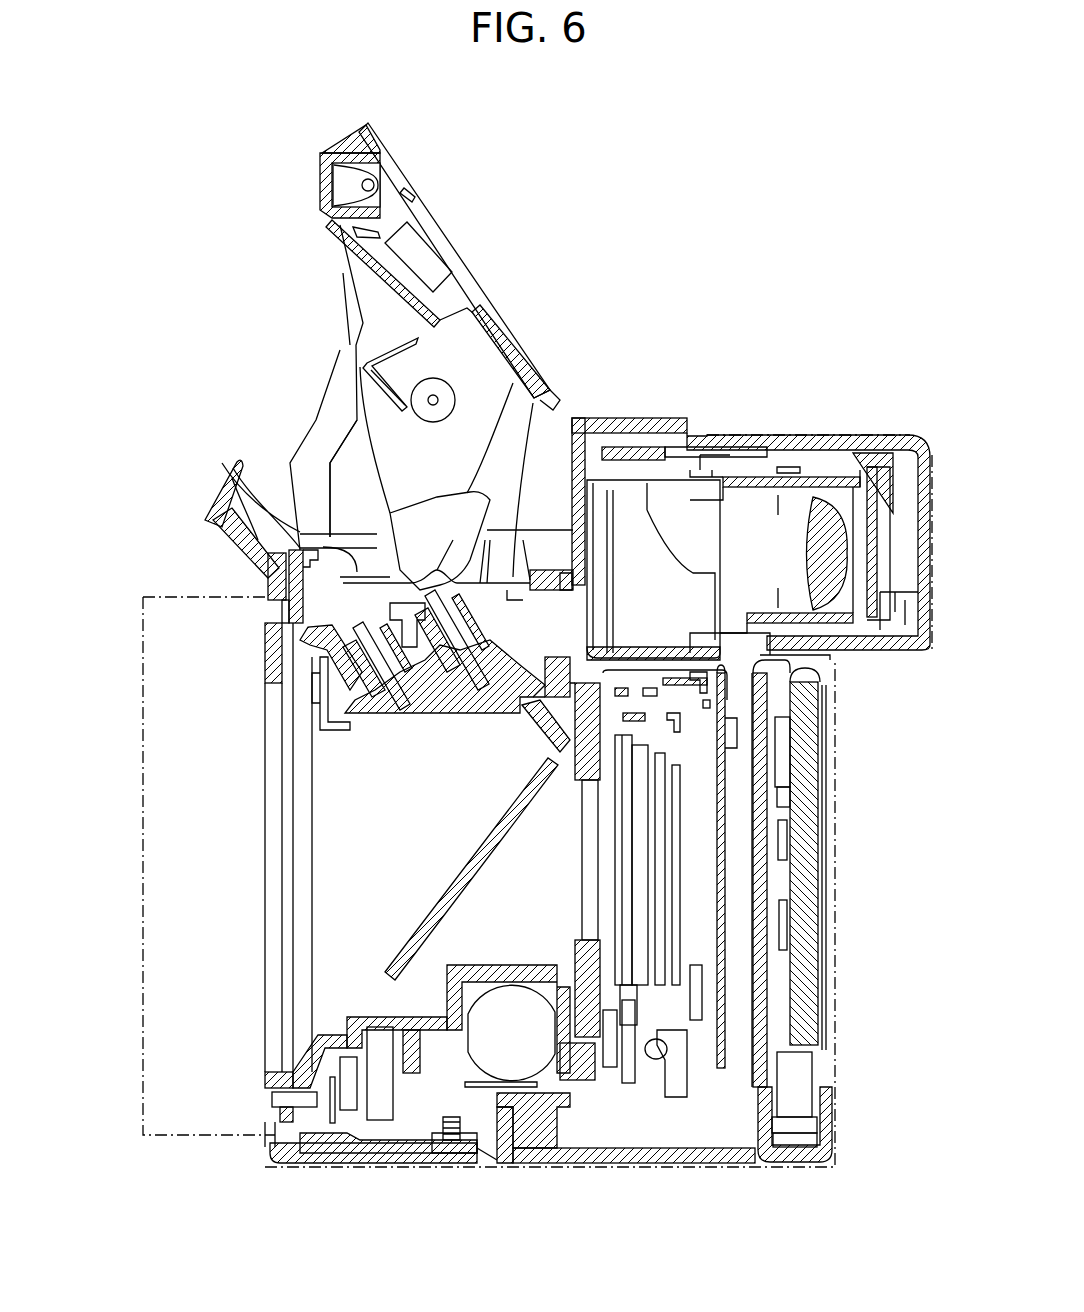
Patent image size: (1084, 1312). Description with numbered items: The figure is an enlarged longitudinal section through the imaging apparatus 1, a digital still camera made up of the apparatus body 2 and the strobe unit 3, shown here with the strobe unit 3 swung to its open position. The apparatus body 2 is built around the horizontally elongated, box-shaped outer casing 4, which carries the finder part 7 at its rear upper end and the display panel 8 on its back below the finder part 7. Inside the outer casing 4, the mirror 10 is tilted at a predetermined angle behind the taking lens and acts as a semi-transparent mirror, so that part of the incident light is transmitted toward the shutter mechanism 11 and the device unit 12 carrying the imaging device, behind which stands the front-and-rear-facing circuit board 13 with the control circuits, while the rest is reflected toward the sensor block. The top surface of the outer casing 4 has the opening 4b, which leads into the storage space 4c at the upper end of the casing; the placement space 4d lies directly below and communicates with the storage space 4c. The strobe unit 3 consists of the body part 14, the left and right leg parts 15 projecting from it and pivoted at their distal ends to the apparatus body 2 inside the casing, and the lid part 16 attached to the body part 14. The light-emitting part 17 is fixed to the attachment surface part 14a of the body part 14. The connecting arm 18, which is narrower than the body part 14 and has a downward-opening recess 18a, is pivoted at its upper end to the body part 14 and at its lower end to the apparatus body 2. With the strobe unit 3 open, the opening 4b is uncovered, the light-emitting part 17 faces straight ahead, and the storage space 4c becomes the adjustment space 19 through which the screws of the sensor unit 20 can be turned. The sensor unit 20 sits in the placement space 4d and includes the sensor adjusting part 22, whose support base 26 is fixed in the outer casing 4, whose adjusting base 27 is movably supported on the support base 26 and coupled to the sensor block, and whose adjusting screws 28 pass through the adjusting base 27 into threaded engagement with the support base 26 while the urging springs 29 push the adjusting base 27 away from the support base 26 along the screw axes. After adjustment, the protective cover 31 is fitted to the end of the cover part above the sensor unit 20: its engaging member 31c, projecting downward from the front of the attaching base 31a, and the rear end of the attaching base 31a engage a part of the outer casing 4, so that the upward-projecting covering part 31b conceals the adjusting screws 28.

The imaging apparatus 1 is at (718, 158).
The apparatus body 2 is at (840, 774).
The strobe unit 3 is at (418, 172).
The outer casing 4 is at (580, 415).
The opening 4b is at (238, 462).
The storage space 4c is at (232, 478).
The adjustment space 19 is at (245, 509).
The placement space 4d is at (556, 637).
The finder part 7 is at (833, 437).
The display panel 8 is at (815, 872).
The mirror 10 is at (455, 777).
The shutter mechanism 11 is at (556, 1112).
The device unit 12 is at (653, 915).
The circuit board 13 is at (688, 945).
The body part 14 is at (342, 275).
The attachment surface part 14a is at (348, 217).
The leg part 15 is at (352, 440).
The lid part 16 is at (435, 207).
The light-emitting part 17 is at (333, 188).
The connecting arm 18 is at (302, 470).
The recess 18a is at (302, 465).
The sensor unit 20 is at (493, 589).
The sensor adjusting part 22 is at (553, 407).
The support base 26 is at (345, 746).
The adjusting base 27 is at (290, 613).
The adjusting screw 28 is at (318, 646).
The urging spring 29 is at (330, 712).
The protective cover 31 is at (367, 497).
The attaching base 31a is at (520, 585).
The covering part 31b is at (278, 568).
The engaging member 31c is at (290, 602).